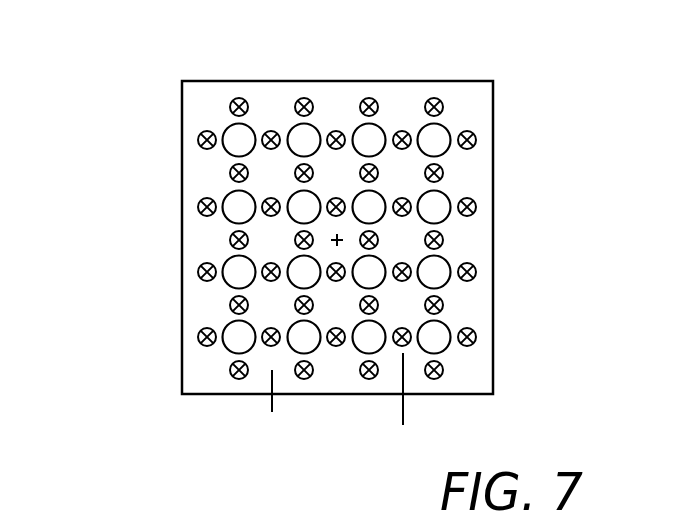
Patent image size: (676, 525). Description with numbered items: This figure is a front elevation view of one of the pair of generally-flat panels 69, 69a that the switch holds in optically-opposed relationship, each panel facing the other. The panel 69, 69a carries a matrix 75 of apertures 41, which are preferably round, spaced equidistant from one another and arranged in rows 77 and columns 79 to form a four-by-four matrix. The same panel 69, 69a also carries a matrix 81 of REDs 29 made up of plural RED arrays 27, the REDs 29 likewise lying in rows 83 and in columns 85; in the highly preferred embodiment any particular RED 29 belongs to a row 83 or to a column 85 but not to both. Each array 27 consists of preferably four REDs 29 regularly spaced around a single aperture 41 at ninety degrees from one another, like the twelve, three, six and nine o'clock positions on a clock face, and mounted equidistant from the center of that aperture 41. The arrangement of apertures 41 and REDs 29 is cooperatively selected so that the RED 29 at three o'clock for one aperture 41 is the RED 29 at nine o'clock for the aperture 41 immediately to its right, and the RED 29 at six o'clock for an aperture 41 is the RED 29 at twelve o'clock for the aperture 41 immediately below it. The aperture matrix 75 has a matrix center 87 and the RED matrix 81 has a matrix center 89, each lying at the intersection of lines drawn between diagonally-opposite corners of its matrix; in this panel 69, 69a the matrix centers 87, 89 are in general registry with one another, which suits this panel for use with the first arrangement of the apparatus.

The panel 69 is at (322, 202).
The panel 69a is at (288, 81).
The column 79 is at (318, 131).
The RED 29 is at (368, 103).
The aperture 41 is at (225, 128).
The row 77 is at (451, 126).
The matrix center 87 is at (182, 233).
The matrix center 89 is at (332, 241).
The row 83 is at (444, 304).
The matrix of apertures 75 is at (217, 290).
The matrix of REDs 81 is at (233, 382).
The column 85 is at (337, 405).
The RED array 27 is at (322, 377).